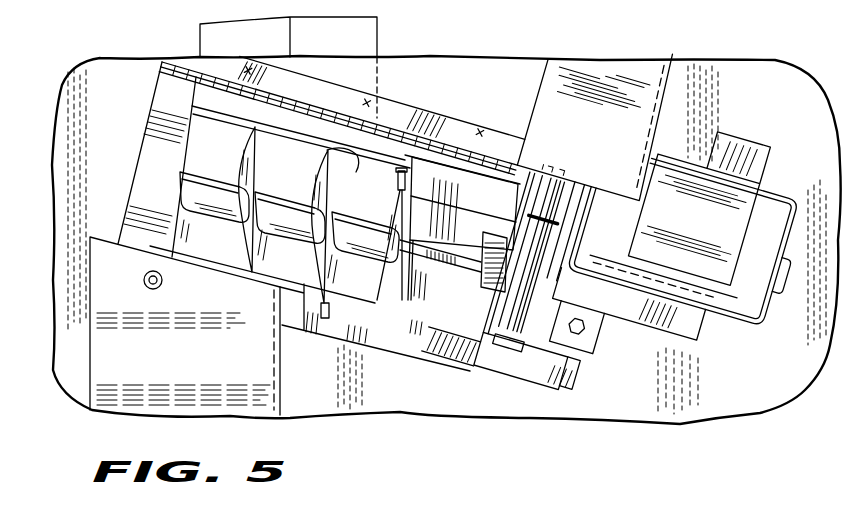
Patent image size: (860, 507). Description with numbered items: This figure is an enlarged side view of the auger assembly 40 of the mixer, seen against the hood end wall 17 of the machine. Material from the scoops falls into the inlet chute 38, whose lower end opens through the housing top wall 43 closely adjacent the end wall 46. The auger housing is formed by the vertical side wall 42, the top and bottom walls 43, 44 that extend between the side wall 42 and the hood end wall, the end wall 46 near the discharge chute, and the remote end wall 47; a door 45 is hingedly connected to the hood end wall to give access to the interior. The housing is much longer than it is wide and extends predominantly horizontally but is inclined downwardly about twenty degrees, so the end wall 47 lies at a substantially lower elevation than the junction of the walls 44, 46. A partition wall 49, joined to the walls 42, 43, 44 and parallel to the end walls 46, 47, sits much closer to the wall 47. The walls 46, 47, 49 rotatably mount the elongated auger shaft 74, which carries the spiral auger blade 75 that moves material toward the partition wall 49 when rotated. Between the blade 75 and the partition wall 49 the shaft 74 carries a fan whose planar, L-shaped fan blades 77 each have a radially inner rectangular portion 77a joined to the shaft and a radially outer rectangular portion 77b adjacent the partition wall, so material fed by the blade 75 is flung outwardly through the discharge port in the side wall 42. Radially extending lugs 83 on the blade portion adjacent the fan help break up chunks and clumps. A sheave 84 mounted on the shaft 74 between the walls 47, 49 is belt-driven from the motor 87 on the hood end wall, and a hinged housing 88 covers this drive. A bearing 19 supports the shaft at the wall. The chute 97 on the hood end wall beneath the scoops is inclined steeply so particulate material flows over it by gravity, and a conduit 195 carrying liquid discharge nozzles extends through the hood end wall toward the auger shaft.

The cabinet 17 is at (755, 376).
The bearing 19 is at (482, 238).
The inlet chute 38 is at (222, 37).
The auger assembly 40 is at (433, 327).
The side wall 42 is at (230, 153).
The top wall 43 is at (333, 127).
The bottom wall 44 is at (482, 367).
The door 45 is at (433, 78).
The end wall 46 is at (155, 138).
The end wall 47 is at (460, 272).
The partition wall 49 is at (453, 343).
The auger shaft 74 is at (393, 264).
The spiral auger blade 75 is at (184, 246).
The fan blades 77 is at (460, 215).
The radially inner rectangular portion 77a is at (448, 168).
The radially outer rectangular portion 77b is at (519, 184).
The lugs 83 is at (397, 174).
The sheave 84 is at (556, 312).
The motor 87 is at (770, 200).
The housing 88 is at (647, 92).
The chute 97 is at (362, 41).
The conduit 195 is at (152, 290).